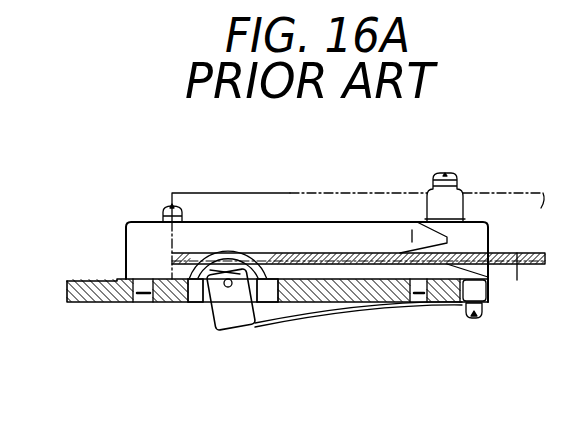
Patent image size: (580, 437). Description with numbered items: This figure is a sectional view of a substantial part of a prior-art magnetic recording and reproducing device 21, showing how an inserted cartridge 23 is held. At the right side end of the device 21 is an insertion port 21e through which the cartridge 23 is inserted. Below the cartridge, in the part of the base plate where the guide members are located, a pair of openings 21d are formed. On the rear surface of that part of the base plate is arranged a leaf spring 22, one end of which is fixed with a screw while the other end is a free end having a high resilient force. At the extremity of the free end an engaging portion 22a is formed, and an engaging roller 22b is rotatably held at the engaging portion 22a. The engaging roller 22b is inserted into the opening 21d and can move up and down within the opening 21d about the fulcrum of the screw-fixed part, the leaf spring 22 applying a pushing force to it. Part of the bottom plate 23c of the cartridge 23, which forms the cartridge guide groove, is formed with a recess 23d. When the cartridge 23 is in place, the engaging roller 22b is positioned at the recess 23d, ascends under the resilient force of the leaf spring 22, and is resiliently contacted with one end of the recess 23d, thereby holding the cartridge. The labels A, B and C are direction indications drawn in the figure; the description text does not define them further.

The magnetic recording and reproducing device 21 is at (125, 238).
The opening 21d is at (262, 292).
The insertion port 21e is at (455, 247).
The leaf spring 22 is at (317, 318).
The engaging portion 22a is at (230, 310).
The engaging roller 22b is at (202, 282).
The cartridge 23 is at (348, 211).
The bottom plate 23c is at (517, 264).
The recess 23d is at (253, 253).
The direction arrow A is at (206, 270).
The direction arrow B is at (175, 178).
The direction arrow C is at (498, 173).